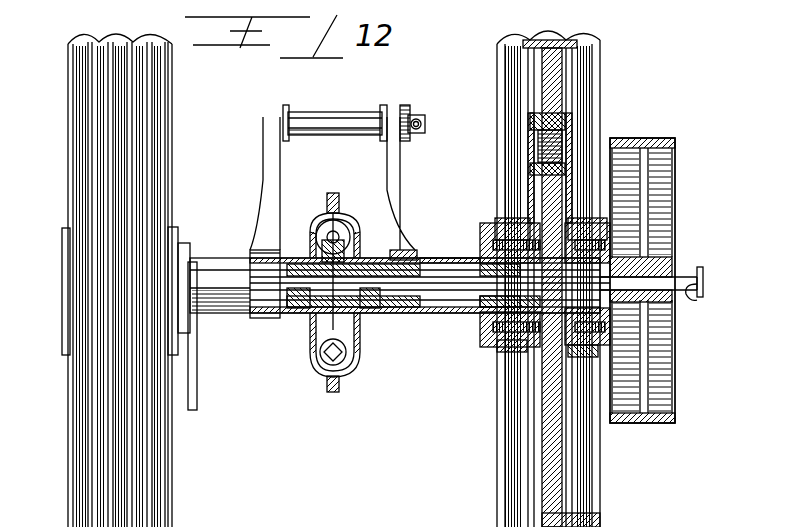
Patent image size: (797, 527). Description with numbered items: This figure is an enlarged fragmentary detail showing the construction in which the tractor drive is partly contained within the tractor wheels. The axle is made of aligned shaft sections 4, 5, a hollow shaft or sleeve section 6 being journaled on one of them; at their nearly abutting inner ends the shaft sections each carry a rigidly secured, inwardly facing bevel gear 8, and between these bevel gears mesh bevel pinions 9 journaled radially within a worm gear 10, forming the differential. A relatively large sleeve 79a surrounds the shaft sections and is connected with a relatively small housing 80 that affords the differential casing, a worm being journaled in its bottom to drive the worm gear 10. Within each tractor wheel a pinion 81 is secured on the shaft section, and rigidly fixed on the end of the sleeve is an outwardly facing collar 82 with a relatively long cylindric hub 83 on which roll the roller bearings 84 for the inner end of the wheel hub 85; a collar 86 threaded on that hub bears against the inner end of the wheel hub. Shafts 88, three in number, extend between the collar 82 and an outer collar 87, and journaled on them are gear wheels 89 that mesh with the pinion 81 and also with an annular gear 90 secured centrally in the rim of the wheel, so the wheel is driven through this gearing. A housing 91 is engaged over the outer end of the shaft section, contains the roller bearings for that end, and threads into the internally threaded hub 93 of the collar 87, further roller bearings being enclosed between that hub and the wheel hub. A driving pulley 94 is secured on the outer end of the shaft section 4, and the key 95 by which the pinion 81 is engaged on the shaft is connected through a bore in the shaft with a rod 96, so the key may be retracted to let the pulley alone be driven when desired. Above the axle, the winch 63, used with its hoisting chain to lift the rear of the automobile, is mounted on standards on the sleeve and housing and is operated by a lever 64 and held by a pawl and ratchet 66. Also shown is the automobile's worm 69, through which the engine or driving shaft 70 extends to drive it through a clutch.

The shaft section 4 is at (457, 287).
The shaft section 5 is at (282, 318).
The tubular shaft section 6 is at (356, 262).
The bevel gear 8 is at (370, 298).
The bevel pinion 9 is at (326, 250).
The worm gear 10 is at (338, 245).
The winch 63 is at (342, 115).
The lever 64 is at (425, 122).
The ratchet 66 is at (407, 105).
The worm 69 is at (318, 357).
The driving shaft 70 is at (346, 353).
The sleeve 79a is at (428, 258).
The housing 80 is at (355, 227).
The pinion 81 is at (585, 352).
The collar 82 is at (537, 148).
The cylindric hub 83 is at (477, 267).
The roller bearings 84 is at (515, 222).
The wheel hub 85 is at (505, 353).
The collar 86 is at (497, 320).
The collar 87 is at (569, 127).
The shafts 88 is at (552, 152).
The gear wheels 89 is at (552, 82).
The annular gear 90 is at (540, 50).
The housing 91 is at (603, 257).
The internally threaded hub 93 is at (603, 317).
The driving pulley 94 is at (660, 263).
The key 95 is at (507, 317).
The rod 96 is at (700, 297).